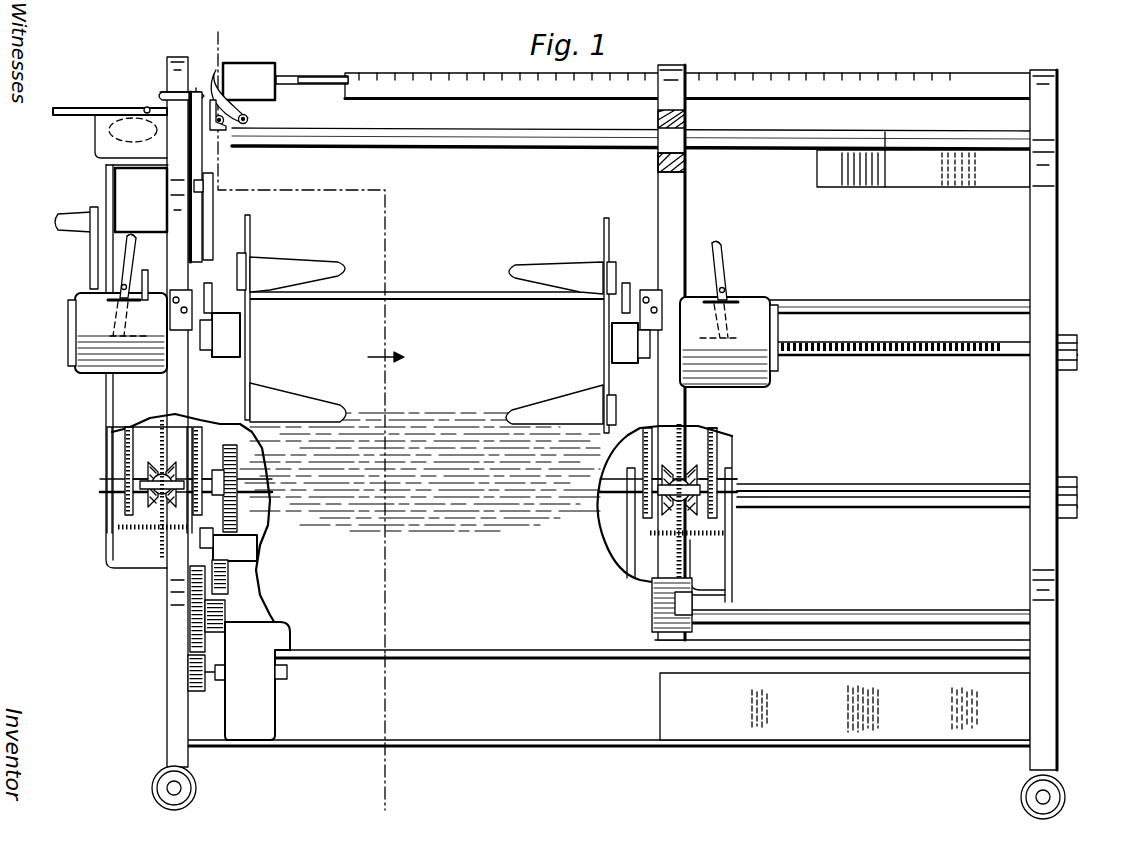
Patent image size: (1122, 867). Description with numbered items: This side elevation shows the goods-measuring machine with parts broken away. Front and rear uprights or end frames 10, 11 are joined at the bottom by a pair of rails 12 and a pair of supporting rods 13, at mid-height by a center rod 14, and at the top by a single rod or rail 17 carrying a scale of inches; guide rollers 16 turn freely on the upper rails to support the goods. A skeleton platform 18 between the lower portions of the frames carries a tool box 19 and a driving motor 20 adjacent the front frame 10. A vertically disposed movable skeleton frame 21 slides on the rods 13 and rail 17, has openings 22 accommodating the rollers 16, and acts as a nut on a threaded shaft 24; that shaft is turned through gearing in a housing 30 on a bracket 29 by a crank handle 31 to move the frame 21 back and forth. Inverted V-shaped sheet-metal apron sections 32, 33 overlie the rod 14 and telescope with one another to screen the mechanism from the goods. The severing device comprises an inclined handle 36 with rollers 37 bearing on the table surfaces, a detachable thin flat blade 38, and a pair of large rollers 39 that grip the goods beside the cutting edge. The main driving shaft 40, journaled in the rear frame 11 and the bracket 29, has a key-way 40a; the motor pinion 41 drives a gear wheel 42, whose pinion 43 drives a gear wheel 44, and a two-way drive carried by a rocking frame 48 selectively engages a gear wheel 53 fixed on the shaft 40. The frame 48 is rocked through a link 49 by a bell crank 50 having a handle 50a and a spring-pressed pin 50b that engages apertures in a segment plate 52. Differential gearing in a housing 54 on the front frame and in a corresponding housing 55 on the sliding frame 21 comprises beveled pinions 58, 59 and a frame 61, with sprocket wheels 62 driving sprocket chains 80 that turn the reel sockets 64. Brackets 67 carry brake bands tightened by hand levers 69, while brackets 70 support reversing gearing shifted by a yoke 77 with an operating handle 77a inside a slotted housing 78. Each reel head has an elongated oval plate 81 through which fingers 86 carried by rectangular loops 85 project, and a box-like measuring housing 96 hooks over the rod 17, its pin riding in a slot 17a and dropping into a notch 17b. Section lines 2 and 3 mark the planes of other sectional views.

The section line 2- 2 is at (52, 449).
The section line 3- 3 is at (299, 420).
The front upright or end frame 10 is at (168, 692).
The rear upright or end frame 11 is at (1050, 640).
The rails 12 is at (815, 652).
The supporting rods 13 is at (920, 612).
The center rod 14 is at (930, 313).
The guide rollers 16 is at (485, 148).
The rod or rail 17 is at (975, 82).
The slot 17a is at (290, 78).
The notch 17b is at (338, 77).
The skeleton platform 18 is at (536, 748).
The tool box 19 is at (845, 706).
The driving motor 20 is at (247, 681).
The movable skeleton frame 21 is at (660, 202).
The openings 22 is at (687, 165).
The threaded shaft 24 is at (945, 356).
The bracket 29 is at (108, 176).
The housing 30 is at (151, 274).
The crank handle 31 is at (88, 228).
The apron section 32 is at (272, 284).
The second apron section 33 is at (420, 471).
The handle 36 is at (226, 70).
The rollers 37 is at (226, 132).
The thin flat blade 38 is at (250, 124).
The large rollers 39 is at (249, 119).
The main driving shaft 40 is at (950, 490).
The key-way 40a is at (845, 492).
The pinion 41 is at (196, 688).
The gear wheel 42 is at (190, 642).
The pinion 43 is at (224, 632).
The gear wheel 44 is at (228, 592).
The rocking frame 48 is at (258, 547).
The link 49 is at (212, 232).
The bell crank 50 is at (208, 78).
The handle 50a is at (170, 93).
The spring pressed pin 50b is at (192, 128).
The segment plate 52 is at (192, 170).
The gear wheel 53 is at (238, 510).
The housing 54 is at (107, 513).
The housing 55 is at (712, 540).
The beveled pinions 58 is at (164, 498).
The beveled pinions 59 is at (168, 474).
The frame 61 is at (146, 480).
The sprocket wheels 62 is at (128, 466).
The sockets 64 is at (425, 338).
The brackets 67 is at (180, 290).
The hand lever 69 is at (214, 294).
The brackets 70 is at (75, 311).
The yoke 77 is at (124, 272).
The operating handle 77a is at (130, 246).
The housing 78 is at (95, 362).
The sprocket chain 80 is at (134, 428).
The oval plate 81 is at (251, 232).
The rectangular loops 85 is at (618, 274).
The finger 86 is at (293, 400).
The box-like housing 96 is at (249, 81).